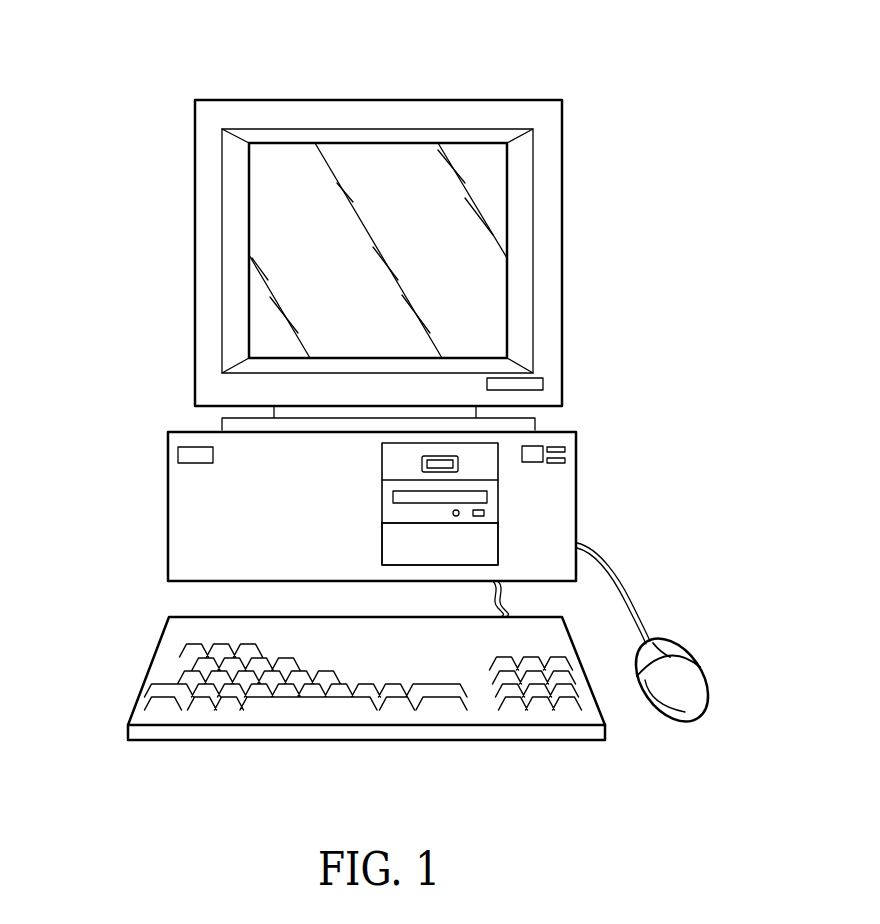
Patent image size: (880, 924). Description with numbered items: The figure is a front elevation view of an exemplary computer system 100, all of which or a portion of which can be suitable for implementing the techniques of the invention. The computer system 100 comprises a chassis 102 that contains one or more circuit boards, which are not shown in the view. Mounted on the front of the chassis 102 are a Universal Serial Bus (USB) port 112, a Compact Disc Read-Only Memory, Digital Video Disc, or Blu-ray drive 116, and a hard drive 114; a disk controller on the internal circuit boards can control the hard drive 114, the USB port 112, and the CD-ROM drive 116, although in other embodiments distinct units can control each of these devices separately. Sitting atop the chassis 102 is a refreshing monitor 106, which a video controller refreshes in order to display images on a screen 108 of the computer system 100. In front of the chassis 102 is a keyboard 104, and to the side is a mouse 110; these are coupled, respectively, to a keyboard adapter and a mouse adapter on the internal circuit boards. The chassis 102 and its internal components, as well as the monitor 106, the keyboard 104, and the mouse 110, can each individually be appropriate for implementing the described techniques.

The computer system 100 is at (553, 77).
The chassis 102 is at (168, 510).
The keyboard 104 is at (149, 666).
The refreshing monitor 106 is at (267, 100).
The screen 108 is at (297, 255).
The mouse 110 is at (700, 668).
The Universal Serial Bus (USB) port 112 is at (459, 461).
The hard drive 114 is at (488, 543).
The CD-ROM, DVD, or Blu-ray drive 116 is at (487, 503).